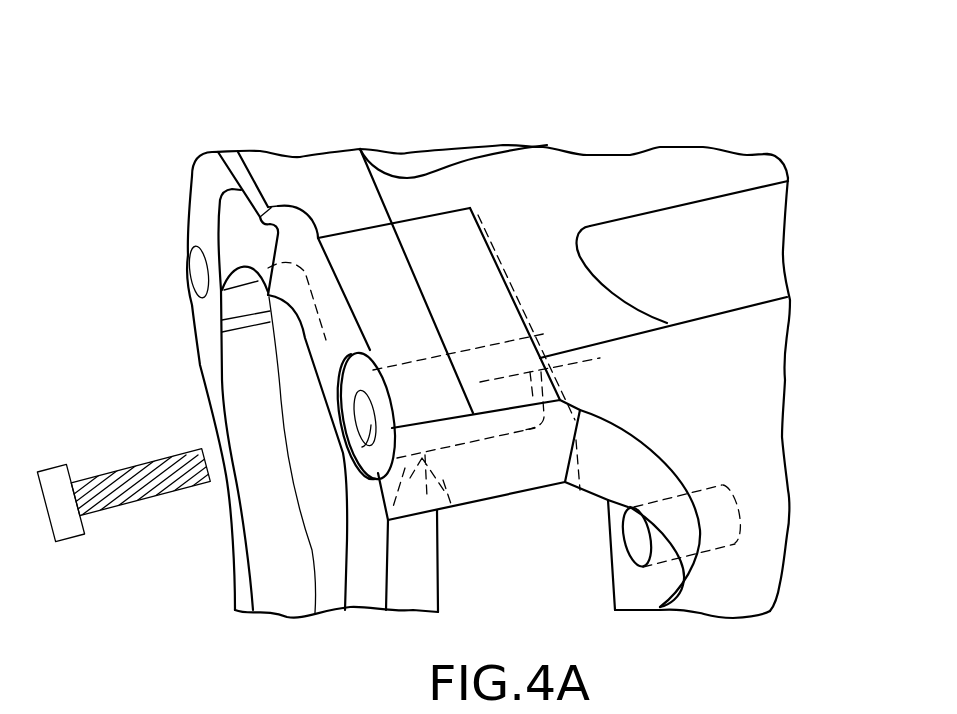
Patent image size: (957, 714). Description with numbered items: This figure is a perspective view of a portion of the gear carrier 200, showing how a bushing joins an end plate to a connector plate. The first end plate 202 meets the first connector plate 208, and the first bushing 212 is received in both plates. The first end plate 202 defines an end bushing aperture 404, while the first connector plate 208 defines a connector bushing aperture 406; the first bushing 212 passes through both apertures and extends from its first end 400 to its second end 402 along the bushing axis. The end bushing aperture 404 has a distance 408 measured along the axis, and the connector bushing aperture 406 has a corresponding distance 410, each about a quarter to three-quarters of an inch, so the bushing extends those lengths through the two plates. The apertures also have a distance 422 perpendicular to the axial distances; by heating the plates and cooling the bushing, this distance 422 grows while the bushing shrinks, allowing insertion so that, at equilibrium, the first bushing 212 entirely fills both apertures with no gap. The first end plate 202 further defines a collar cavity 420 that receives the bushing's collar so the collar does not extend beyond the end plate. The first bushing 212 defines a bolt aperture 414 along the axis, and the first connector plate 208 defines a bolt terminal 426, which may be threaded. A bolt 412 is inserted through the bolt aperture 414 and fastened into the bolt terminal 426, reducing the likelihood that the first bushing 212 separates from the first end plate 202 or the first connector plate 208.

The gear carrier 200 is at (117, 35).
The first end plate 202 is at (347, 207).
The first connector plate 208 is at (408, 195).
The first bushing 212 is at (360, 404).
The first end 400 is at (347, 395).
The second end 402 is at (580, 490).
The end bushing aperture 404 is at (388, 520).
The connector bushing aperture 406 is at (507, 437).
The distance 408 is at (388, 395).
The distance 410 is at (463, 377).
The bolt 412 is at (85, 535).
The bolt aperture 414 is at (365, 430).
The collar cavity 420 is at (367, 350).
The distance 422 is at (430, 447).
The bolt terminal 426 is at (590, 361).